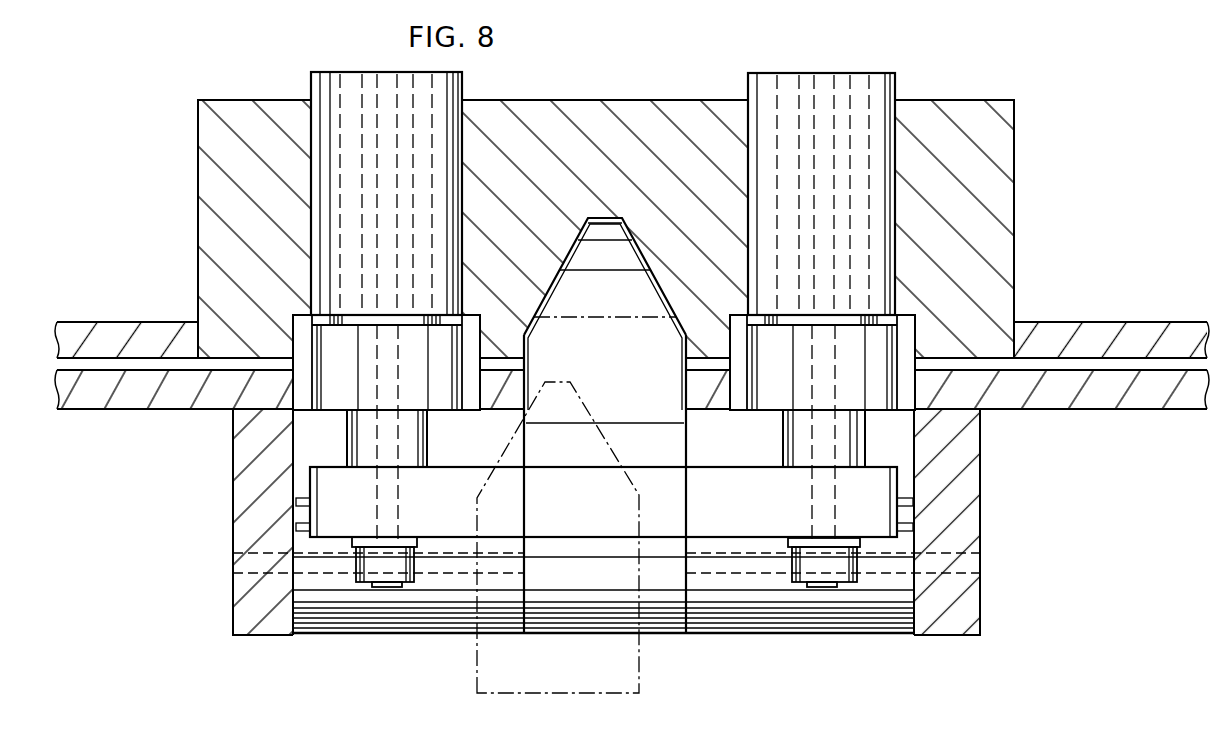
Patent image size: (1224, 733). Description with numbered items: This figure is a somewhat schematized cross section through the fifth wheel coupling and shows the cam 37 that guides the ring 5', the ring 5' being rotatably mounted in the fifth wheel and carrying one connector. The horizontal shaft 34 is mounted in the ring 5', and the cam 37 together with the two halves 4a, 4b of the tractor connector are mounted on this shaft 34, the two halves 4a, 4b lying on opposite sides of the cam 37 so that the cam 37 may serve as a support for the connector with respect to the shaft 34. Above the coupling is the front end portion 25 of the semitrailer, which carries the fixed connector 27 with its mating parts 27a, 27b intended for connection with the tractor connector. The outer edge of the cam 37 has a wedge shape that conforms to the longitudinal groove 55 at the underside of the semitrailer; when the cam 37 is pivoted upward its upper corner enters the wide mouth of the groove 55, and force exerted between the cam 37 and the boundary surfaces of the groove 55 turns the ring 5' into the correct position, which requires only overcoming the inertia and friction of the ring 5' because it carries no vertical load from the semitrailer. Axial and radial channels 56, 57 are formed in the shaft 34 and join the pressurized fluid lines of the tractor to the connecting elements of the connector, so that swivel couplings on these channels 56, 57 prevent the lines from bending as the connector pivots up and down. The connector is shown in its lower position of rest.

The fixed connector 27 is at (197, 99).
The guide sleeve 27a is at (462, 80).
The guide sleeve 27b is at (895, 82).
The front end portion 25 is at (1080, 342).
The ring 5' is at (632, 410).
The longitudinal groove 55 is at (638, 258).
The cam 37 is at (655, 403).
The connector half 4a is at (441, 387).
The connector half 4b is at (869, 387).
The axial channel 56 is at (334, 566).
The radial channel 57 is at (388, 498).
The horizontal shaft 34 is at (783, 607).